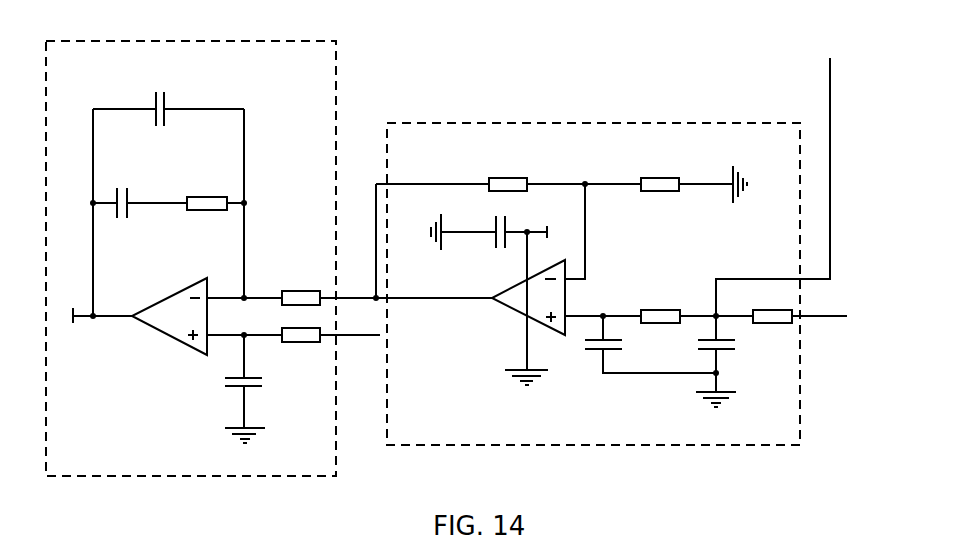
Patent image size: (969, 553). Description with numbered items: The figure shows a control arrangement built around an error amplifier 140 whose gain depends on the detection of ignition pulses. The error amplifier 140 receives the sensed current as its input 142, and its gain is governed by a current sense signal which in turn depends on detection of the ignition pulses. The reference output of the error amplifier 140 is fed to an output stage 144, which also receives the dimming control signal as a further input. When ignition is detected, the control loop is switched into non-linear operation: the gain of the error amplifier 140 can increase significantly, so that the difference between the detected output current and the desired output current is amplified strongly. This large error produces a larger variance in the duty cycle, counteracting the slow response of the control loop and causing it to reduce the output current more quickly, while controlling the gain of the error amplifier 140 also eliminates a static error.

The error amplifier 140 is at (575, 123).
The input 142 is at (830, 97).
The output stage 144 is at (336, 107).